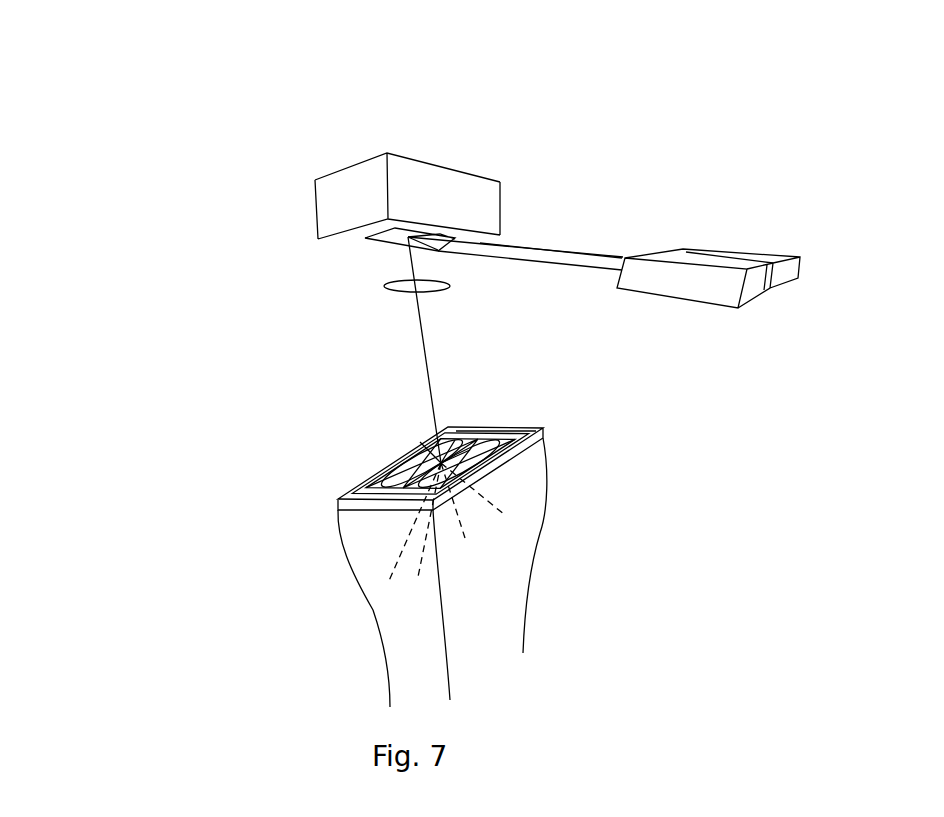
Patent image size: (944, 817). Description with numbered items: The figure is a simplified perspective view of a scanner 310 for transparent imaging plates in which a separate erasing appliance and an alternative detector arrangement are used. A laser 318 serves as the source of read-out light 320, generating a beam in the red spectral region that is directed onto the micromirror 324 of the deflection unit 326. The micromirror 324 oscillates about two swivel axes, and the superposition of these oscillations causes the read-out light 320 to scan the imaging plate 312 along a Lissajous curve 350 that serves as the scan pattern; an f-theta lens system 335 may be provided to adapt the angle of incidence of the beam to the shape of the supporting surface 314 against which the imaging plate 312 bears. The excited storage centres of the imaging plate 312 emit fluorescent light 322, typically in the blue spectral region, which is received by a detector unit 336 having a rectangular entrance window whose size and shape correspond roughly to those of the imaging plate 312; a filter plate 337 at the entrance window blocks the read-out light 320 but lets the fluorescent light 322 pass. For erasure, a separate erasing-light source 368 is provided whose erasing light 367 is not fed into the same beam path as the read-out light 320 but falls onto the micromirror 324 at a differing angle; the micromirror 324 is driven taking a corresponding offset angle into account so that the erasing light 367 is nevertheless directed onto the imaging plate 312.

The scanner 310 is at (243, 168).
The deflection unit 326 is at (417, 176).
The micromirror 324 is at (394, 236).
The f-theta lens system 335 is at (400, 286).
The read-out light 320 is at (516, 250).
The erasing light 367 is at (587, 252).
The erasing-light source 368 is at (743, 254).
The laser 318 is at (677, 285).
The supporting surface 314 is at (351, 497).
The imaging plate 312 is at (541, 480).
The Lissajous curve 350 is at (483, 434).
The filter plate 337 is at (525, 440).
The fluorescent light 322 is at (460, 523).
The detector unit 336 is at (395, 623).